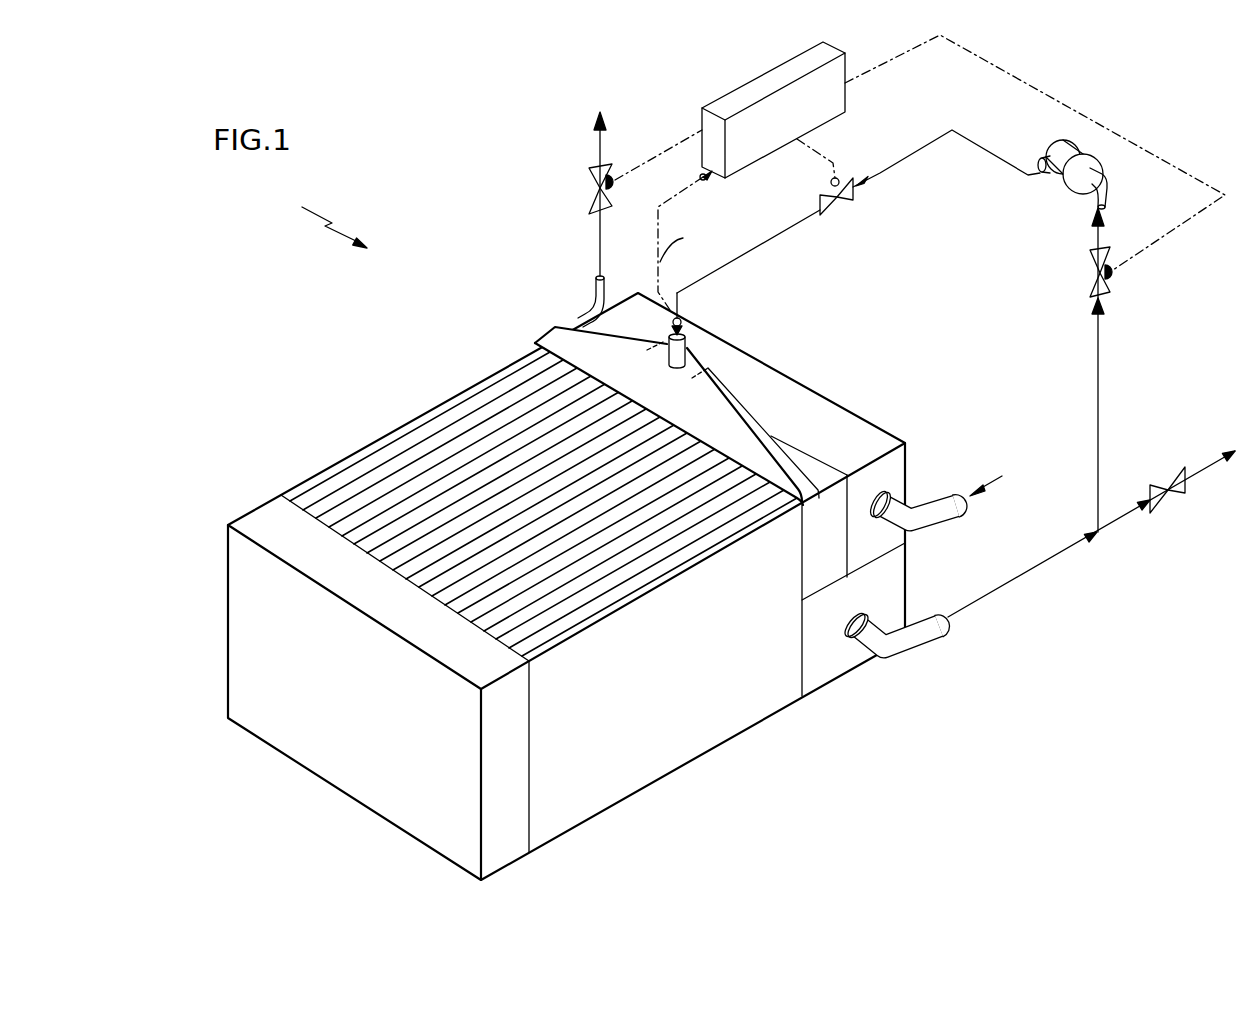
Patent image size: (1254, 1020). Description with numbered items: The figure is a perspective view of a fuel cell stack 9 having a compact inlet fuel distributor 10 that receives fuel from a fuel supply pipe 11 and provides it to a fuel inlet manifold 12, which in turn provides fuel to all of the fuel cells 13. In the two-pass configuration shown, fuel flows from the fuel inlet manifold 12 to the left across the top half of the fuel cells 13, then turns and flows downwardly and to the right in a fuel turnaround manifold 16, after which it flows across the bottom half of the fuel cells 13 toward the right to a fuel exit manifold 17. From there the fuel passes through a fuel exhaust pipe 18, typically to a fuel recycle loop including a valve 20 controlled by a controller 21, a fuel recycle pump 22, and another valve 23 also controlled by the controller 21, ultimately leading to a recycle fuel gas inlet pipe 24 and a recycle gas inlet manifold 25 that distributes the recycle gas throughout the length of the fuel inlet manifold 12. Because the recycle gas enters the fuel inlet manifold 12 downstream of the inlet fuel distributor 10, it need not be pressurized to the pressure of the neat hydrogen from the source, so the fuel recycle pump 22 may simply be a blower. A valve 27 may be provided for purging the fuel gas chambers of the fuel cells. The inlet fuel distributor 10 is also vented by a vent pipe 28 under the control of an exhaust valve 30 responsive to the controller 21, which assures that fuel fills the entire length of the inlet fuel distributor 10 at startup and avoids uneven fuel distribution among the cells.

The fuel cell stack 9 is at (324, 215).
The inlet fuel distributor 10 is at (862, 432).
The fuel supply pipe 11 is at (948, 492).
The fuel inlet manifold 12 is at (588, 318).
The fuel cells 13 is at (455, 440).
The fuel turnaround manifold 16 is at (268, 522).
The fuel exit manifold 17 is at (821, 665).
The fuel exhaust pipe 18 is at (935, 618).
The valve 20 is at (1093, 263).
The controller 21 is at (773, 80).
The fuel recycle pump 22 is at (1077, 198).
The valve 23 is at (840, 208).
The recycle fuel gas inlet pipe 24 is at (686, 348).
The recycle gas inlet manifold 25 is at (748, 427).
The valve 27 is at (1162, 480).
The vent pipe 28 is at (611, 298).
The exhaust valve 30 is at (597, 190).